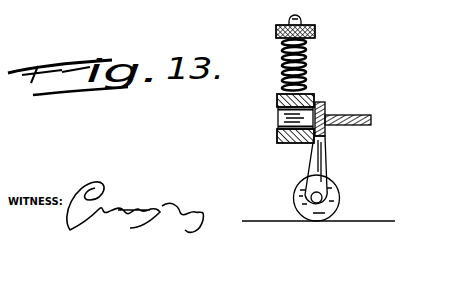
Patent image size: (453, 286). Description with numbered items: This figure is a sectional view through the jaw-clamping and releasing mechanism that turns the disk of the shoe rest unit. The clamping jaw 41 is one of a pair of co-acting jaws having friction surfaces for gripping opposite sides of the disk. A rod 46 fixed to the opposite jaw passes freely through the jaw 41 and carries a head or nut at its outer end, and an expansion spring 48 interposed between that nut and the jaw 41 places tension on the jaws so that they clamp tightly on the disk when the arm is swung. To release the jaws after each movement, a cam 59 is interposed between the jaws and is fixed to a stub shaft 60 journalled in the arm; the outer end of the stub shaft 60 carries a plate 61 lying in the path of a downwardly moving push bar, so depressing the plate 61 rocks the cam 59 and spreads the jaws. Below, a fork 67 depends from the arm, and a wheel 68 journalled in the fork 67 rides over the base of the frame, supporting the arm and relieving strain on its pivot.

The clamping jaw 41 is at (315, 31).
The rod 46 is at (306, 71).
The expansion spring 48 is at (283, 69).
The stub shaft 60 is at (277, 119).
The cam 59 is at (276, 125).
The plate 61 is at (357, 116).
The fork 67 is at (326, 150).
The wheel 68 is at (339, 195).